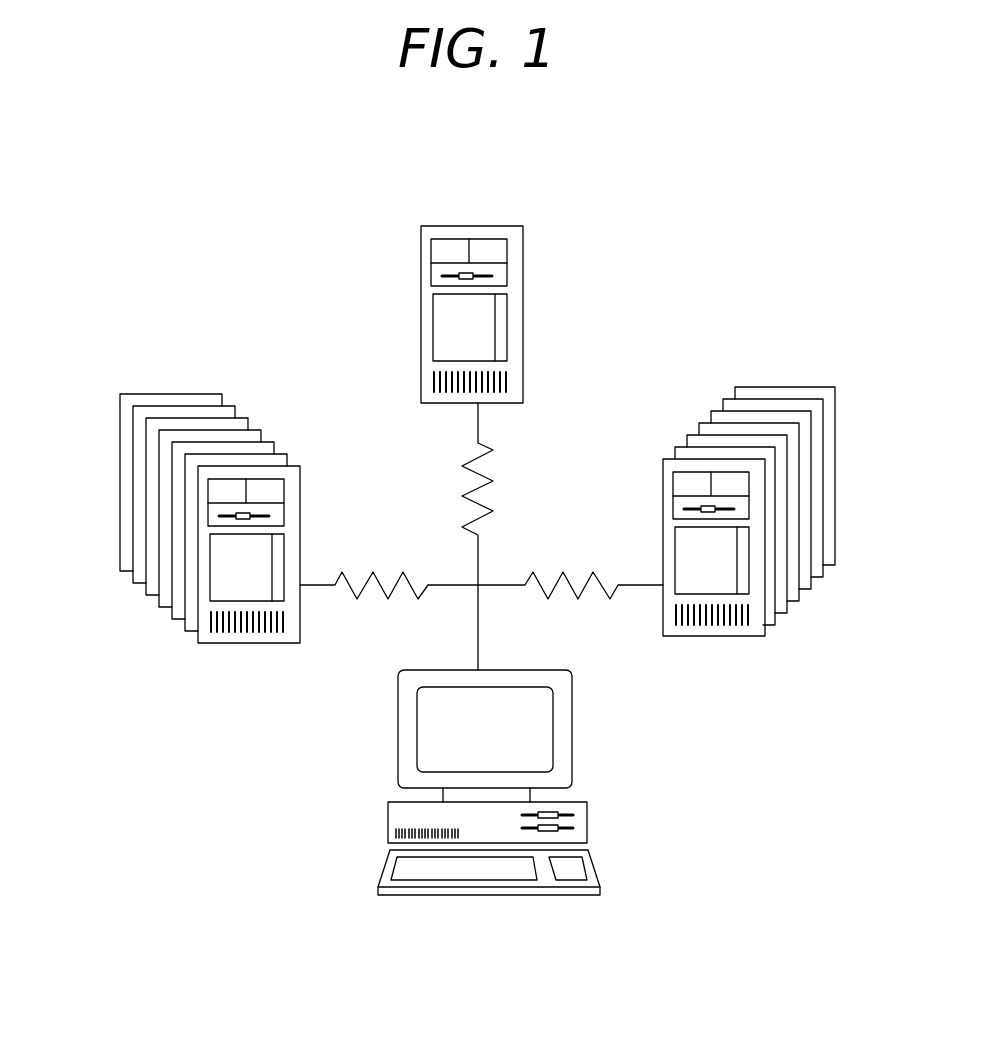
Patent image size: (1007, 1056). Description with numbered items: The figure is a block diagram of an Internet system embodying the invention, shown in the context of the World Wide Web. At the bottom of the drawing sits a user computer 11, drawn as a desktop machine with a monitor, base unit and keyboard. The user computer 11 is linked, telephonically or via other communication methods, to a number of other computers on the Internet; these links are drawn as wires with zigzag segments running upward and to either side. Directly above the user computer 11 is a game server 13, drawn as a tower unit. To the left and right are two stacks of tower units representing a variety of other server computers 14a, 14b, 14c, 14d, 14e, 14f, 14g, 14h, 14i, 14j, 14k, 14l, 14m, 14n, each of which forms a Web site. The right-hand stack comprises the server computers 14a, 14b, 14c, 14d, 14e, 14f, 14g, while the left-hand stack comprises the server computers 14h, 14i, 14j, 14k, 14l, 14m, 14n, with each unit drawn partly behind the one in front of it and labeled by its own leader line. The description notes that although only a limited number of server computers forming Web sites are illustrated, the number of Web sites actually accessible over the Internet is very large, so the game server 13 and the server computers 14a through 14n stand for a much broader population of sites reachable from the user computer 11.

The user computer 11 is at (572, 700).
The game server 13 is at (524, 318).
The server computer 14a is at (763, 637).
The server computer 14b is at (775, 625).
The server computer 14c is at (787, 613).
The server computer 14d is at (799, 601).
The server computer 14e is at (811, 589).
The server computer 14f is at (823, 577).
The server computer 14g is at (835, 563).
The server computer 14h is at (199, 645).
The server computer 14i is at (187, 635).
The server computer 14j is at (174, 622).
The server computer 14k is at (161, 610).
The server computer 14l is at (147, 597).
The server computer 14m is at (143, 583).
The server computer 14n is at (130, 572).